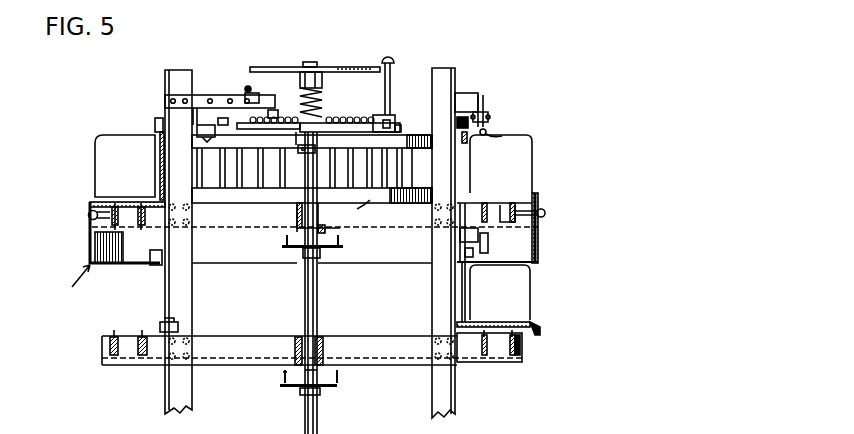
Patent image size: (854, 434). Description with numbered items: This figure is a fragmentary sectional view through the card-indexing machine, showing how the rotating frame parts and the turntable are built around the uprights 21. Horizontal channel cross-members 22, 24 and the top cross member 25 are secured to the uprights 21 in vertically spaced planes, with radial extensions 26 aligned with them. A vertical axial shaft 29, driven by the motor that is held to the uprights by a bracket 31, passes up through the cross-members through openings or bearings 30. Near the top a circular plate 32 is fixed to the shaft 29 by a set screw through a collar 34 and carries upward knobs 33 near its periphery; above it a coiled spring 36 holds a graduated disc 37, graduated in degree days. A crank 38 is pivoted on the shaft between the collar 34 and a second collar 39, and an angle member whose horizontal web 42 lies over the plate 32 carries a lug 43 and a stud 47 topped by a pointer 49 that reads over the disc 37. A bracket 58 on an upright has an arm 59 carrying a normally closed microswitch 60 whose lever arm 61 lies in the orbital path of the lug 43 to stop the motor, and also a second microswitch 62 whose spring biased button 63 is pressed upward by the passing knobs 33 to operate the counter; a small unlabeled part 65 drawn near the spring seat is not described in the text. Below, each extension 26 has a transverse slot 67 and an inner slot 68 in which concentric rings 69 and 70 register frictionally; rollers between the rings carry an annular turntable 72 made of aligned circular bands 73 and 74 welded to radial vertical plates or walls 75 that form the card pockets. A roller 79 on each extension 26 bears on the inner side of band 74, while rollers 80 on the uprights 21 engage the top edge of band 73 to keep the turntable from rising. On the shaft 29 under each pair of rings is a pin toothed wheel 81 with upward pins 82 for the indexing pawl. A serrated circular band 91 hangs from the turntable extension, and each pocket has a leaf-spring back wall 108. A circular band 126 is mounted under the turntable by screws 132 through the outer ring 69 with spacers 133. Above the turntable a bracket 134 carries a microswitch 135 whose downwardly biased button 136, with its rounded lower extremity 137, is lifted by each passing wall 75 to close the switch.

The upright 21 is at (180, 70).
The cross-member 22 is at (250, 227).
The cross-member 24 is at (385, 365).
The top cross member 25 is at (352, 227).
The radial extension 26 is at (92, 240).
The vertical axial shaft 29 is at (318, 300).
The opening or bearing 30 is at (318, 360).
The bracket 31 is at (312, 120).
The circular plate 32 is at (346, 123).
The upward projections or knobs 33 is at (292, 123).
The collar 34 is at (300, 140).
The coiled spring 36 is at (322, 100).
The graduated disc 37 is at (270, 67).
The crank 38 is at (363, 150).
The second collar 39 is at (318, 150).
The horizontal web 42 is at (382, 115).
The lug 43 is at (399, 125).
The stud 47 is at (392, 95).
The pointer 49 is at (386, 57).
The bracket 58 is at (222, 95).
The arm 59 is at (203, 108).
The microswitch 60 is at (200, 137).
The lever arm 61 is at (223, 122).
The second microswitch 62 is at (247, 86).
The spring biased button 63 is at (257, 148).
The spring seat 65 is at (273, 110).
The transverse slot 67 is at (116, 228).
The slot 68 is at (142, 228).
The ring 69 is at (113, 337).
The ring 70 is at (142, 337).
The annular turntable 72 is at (228, 212).
The circular band 73 is at (410, 148).
The circular band 74 is at (372, 212).
The vertical plate or wall 75 is at (128, 135).
The roller 79 is at (180, 198).
The roller 80 is at (158, 118).
The pin toothed wheel or gear 81 is at (302, 258).
The pin 82 is at (283, 376).
The circular band 91 is at (90, 202).
The back wall 108 is at (468, 285).
The circular band 126 is at (68, 284).
The screw 132 is at (88, 215).
The spacer 133 is at (538, 220).
The bracket 134 is at (478, 93).
The microswitch 135 is at (488, 112).
The actuating lever or button 136 is at (486, 130).
The rounded lower extremity 137 is at (502, 136).